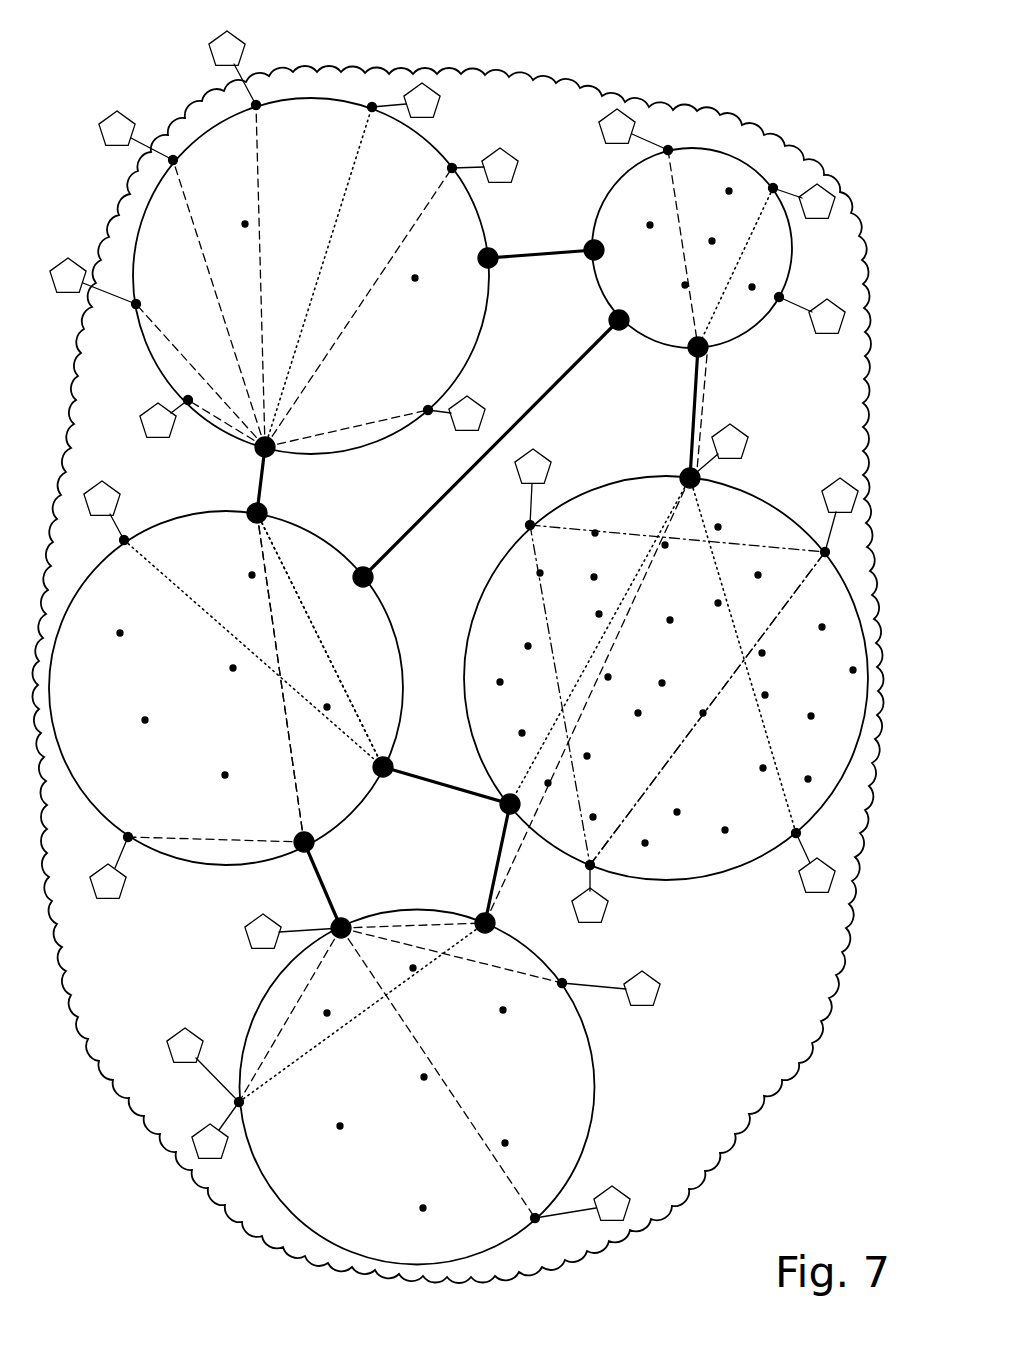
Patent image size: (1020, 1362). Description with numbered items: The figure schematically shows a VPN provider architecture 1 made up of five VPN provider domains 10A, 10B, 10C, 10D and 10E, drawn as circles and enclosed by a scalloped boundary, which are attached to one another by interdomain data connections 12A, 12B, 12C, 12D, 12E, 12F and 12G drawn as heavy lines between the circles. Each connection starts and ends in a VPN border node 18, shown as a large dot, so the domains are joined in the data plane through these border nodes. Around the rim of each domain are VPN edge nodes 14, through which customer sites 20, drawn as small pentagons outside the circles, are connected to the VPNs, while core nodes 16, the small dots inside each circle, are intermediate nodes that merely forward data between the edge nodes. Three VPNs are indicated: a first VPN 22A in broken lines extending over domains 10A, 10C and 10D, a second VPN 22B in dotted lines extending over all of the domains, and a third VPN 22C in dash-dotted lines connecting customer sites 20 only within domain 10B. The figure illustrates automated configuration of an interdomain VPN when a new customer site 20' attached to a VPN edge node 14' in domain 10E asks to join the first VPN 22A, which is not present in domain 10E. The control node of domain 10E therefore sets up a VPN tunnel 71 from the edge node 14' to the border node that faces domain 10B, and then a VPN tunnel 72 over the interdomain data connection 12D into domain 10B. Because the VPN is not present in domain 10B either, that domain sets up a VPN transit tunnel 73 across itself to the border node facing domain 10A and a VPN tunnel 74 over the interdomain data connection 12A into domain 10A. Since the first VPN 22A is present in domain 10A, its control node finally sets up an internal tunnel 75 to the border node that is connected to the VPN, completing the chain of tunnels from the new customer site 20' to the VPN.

The VPN provider architecture 1 is at (744, 1112).
The VPN provider domain 10A is at (594, 1075).
The VPN provider domain 10B is at (728, 872).
The VPN provider domain 10C is at (190, 865).
The VPN provider domain 10D is at (352, 452).
The VPN provider domain 10E is at (748, 343).
The interdomain data connection 12A is at (492, 858).
The interdomain data connection 12B is at (328, 880).
The interdomain data connection 12C is at (446, 780).
The interdomain data connection 12D is at (690, 412).
The interdomain data connection 12E is at (455, 492).
The interdomain data connection 12F is at (258, 478).
The interdomain data connection 12G is at (541, 258).
The VPN edge node 14 is at (475, 655).
The VPN edge node 14' is at (678, 115).
The core node 16 is at (412, 276).
The VPN border node 18 is at (478, 252).
The customer site 20 is at (454, 615).
The new customer site 20' is at (633, 98).
The first VPN 22A is at (291, 760).
The second VPN 22B is at (355, 678).
The third VPN 22C is at (715, 682).
The VPN tunnel 71 is at (676, 238).
The VPN tunnel 72 is at (708, 420).
The VPN transit tunnel 73 is at (672, 572).
The VPN tunnel 74 is at (508, 895).
The internal tunnel 75 is at (400, 918).